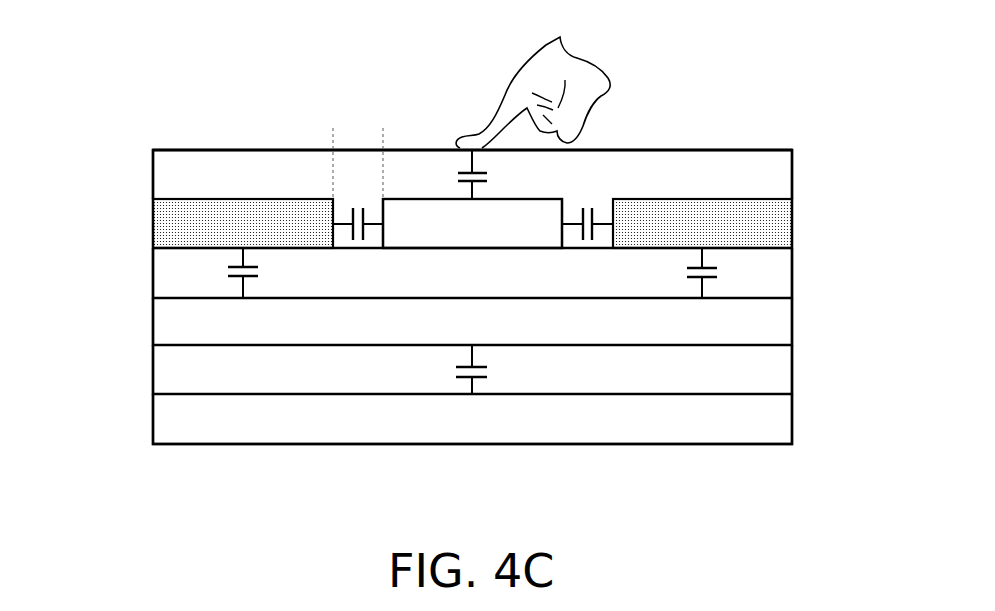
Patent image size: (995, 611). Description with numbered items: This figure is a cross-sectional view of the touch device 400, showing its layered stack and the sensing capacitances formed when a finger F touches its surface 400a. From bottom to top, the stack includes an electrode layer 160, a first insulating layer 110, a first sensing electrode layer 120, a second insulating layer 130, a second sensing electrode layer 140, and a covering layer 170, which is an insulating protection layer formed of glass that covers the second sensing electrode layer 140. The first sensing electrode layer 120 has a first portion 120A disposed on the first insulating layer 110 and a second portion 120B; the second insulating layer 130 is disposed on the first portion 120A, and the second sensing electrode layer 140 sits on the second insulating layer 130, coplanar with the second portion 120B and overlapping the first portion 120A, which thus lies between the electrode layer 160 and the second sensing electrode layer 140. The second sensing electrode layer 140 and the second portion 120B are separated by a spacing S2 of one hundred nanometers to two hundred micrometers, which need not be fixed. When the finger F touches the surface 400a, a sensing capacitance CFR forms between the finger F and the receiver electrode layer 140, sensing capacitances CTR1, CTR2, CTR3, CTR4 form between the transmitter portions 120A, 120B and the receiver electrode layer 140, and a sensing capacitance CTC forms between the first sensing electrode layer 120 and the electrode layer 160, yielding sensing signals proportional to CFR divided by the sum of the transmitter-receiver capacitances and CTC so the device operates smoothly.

The touch device 400 is at (160, 51).
The surface 400a is at (711, 139).
The covering layer 170 is at (778, 174).
The second sensing electrode layer 140 is at (778, 228).
The second insulating layer 130 is at (778, 273).
The first sensing electrode layer 120 is at (537, 494).
The first portion 120A is at (545, 322).
The second portion 120B is at (445, 228).
The first insulating layer 110 is at (778, 369).
The electrode layer 160 is at (778, 417).
The spacing S2 is at (373, 136).
The finger F is at (597, 91).
The sensing capacitance CFR is at (492, 174).
The sensing capacitance CTR1 is at (358, 211).
The sensing capacitance CTR2 is at (587, 211).
The sensing capacitance CTR3 is at (268, 273).
The sensing capacitance CTR4 is at (727, 273).
The sensing capacitance CTC is at (491, 369).